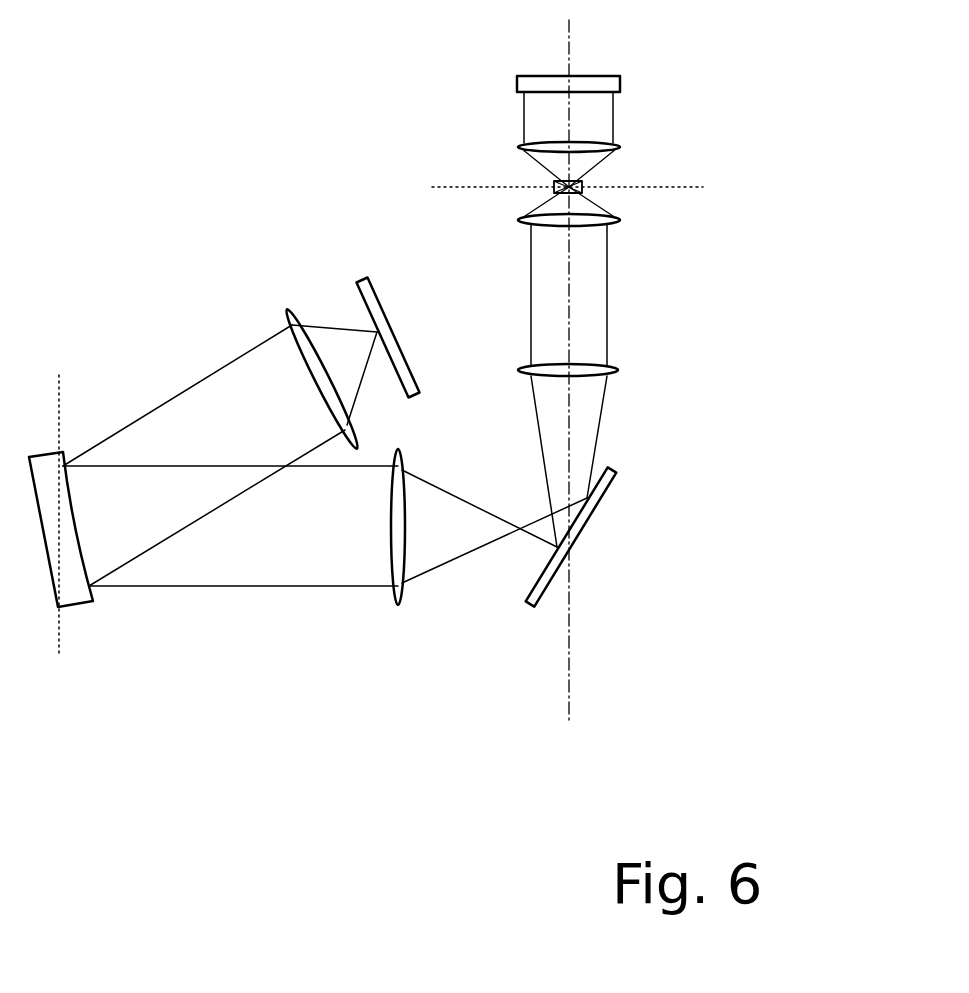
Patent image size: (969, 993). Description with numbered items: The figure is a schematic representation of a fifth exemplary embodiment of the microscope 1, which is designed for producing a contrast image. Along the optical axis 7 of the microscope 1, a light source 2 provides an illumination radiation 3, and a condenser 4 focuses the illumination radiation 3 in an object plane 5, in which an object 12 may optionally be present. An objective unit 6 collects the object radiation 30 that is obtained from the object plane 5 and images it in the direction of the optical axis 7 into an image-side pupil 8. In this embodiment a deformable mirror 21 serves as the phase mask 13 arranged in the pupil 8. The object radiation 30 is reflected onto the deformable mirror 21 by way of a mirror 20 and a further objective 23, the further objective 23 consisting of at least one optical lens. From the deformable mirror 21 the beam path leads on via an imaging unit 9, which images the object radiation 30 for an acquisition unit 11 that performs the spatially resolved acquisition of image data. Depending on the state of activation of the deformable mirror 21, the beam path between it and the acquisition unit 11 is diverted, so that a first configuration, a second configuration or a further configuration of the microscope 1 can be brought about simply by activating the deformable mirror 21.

The microscope 1 is at (426, 68).
The light source 2 is at (621, 79).
The illumination radiation 3 is at (613, 122).
The condenser 4 is at (620, 147).
The object plane 5 is at (672, 185).
The objective unit 6 is at (620, 218).
The optical axis 7 is at (569, 24).
The image-side pupil 8 is at (60, 393).
The imaging unit 9 is at (288, 310).
The acquisition unit 11 is at (408, 358).
The object 12 is at (583, 182).
The phase mask 13 is at (176, 325).
The mirror 20 is at (617, 473).
The deformable mirror 21 is at (70, 608).
The further objective 23 is at (518, 371).
The object radiation 30 is at (607, 280).